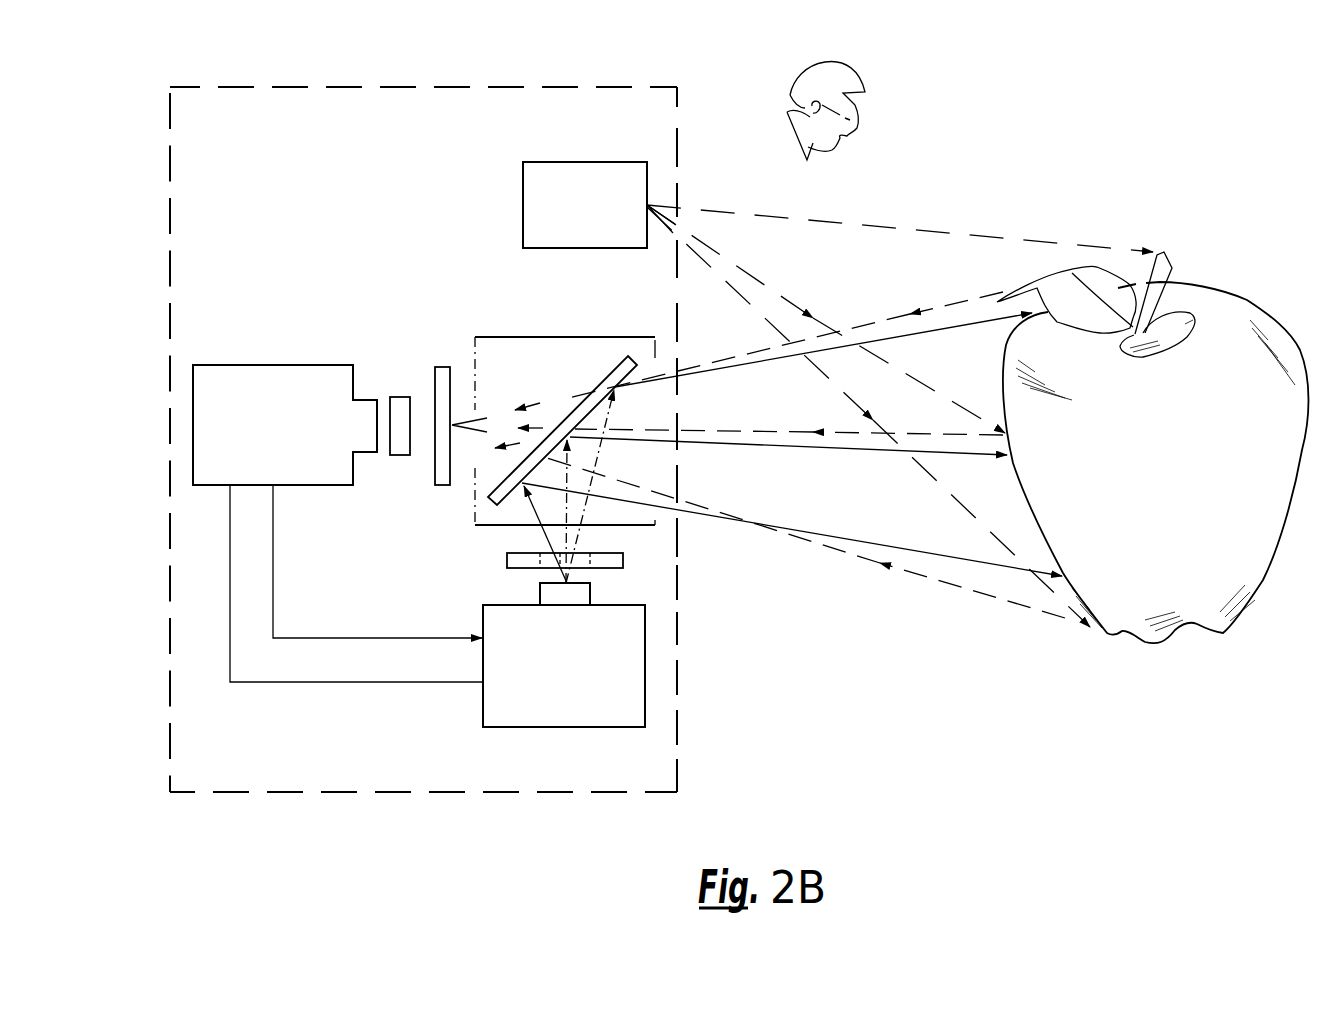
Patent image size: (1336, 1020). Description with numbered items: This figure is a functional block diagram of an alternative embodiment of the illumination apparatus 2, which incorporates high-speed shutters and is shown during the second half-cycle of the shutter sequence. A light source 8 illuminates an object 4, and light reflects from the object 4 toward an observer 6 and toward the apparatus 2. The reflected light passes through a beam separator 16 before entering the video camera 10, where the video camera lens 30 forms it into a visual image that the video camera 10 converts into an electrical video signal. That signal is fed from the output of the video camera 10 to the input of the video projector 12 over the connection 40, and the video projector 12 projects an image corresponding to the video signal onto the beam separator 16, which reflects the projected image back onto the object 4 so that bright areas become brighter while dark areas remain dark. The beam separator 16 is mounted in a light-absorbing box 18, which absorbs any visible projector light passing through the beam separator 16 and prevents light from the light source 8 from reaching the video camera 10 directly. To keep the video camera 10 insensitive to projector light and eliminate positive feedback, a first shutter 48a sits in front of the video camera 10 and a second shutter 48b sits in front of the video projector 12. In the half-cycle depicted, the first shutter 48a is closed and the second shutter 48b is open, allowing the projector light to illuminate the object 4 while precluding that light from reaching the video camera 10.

The illumination apparatus 2 is at (251, 87).
The object 4 is at (1232, 300).
The observer 6 is at (790, 97).
The light source 8 is at (604, 162).
The video camera 10 is at (303, 488).
The video projector 12 is at (483, 620).
The beam separator 16 is at (488, 500).
The light-absorbing box 18 is at (519, 337).
The video camera lens 30 is at (397, 458).
The cables 40 is at (275, 684).
The first shutter 48a is at (439, 367).
The second shutter 48b is at (507, 562).